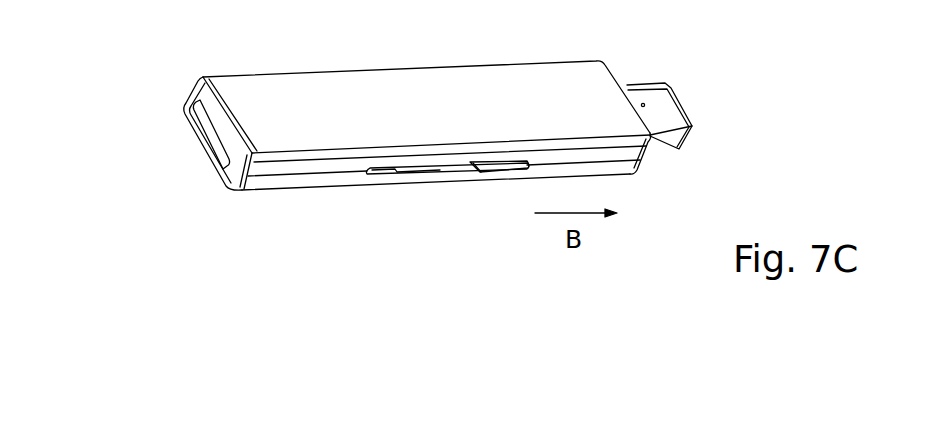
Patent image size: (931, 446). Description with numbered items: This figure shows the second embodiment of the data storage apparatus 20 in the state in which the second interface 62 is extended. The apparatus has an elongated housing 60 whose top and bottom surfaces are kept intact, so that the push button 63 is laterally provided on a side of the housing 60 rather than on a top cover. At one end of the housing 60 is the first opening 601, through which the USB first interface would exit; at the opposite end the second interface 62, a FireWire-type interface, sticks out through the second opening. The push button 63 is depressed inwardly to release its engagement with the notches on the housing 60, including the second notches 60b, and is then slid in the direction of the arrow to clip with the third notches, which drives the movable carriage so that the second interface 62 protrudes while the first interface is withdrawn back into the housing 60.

The data storage apparatus 20 is at (392, 184).
The housing 60 is at (572, 88).
The first opening 601 is at (187, 128).
The second interface 62 is at (668, 107).
The second notches 60b is at (453, 170).
The push button 63 is at (502, 168).